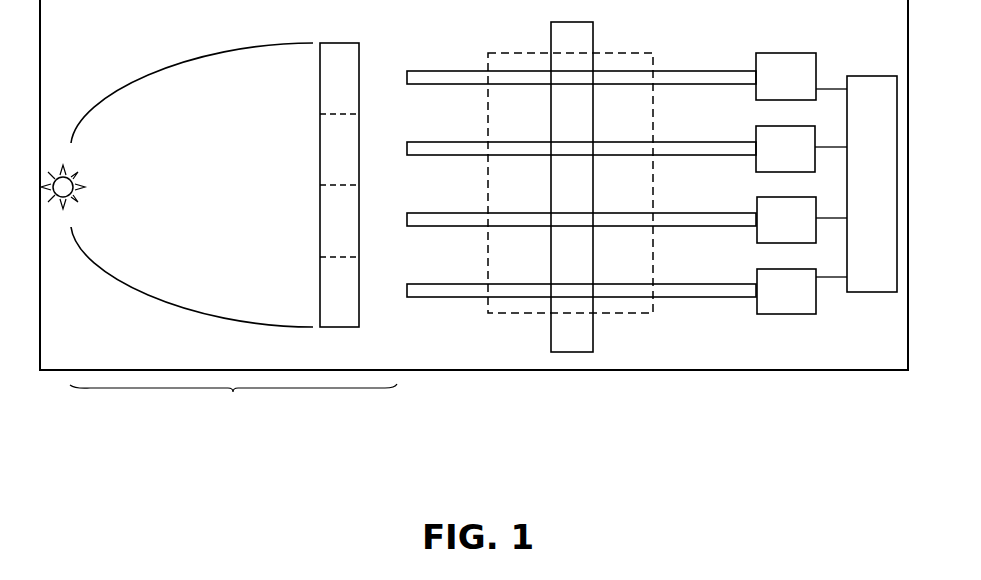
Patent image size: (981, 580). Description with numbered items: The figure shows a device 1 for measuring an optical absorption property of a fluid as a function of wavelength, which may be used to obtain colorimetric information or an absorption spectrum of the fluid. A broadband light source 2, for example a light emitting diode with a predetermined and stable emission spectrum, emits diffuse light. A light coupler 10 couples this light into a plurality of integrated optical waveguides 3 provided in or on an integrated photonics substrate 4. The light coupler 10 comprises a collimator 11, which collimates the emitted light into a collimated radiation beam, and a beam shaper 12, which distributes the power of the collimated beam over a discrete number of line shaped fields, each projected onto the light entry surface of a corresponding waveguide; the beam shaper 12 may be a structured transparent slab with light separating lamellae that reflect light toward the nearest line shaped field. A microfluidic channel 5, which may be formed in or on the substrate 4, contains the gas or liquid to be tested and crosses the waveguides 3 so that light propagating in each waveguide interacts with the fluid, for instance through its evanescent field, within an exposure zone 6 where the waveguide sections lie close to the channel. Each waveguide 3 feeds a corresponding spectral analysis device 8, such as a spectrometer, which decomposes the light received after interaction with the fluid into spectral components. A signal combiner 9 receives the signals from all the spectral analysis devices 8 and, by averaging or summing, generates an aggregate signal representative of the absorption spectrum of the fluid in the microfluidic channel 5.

The device 1 is at (425, 426).
The broadband light source 2 is at (59, 224).
The integrated optical waveguides 3 is at (515, 226).
The integrated photonics substrate 4 is at (55, 370).
The microfluidic channel 5 is at (557, 352).
The exposure zone 6 is at (625, 313).
The spectral analysis devices 8 is at (777, 228).
The signal combiner 9 is at (869, 292).
The light coupler 10 is at (233, 393).
The collimator 11 is at (167, 307).
The beam shaper 12 is at (340, 330).